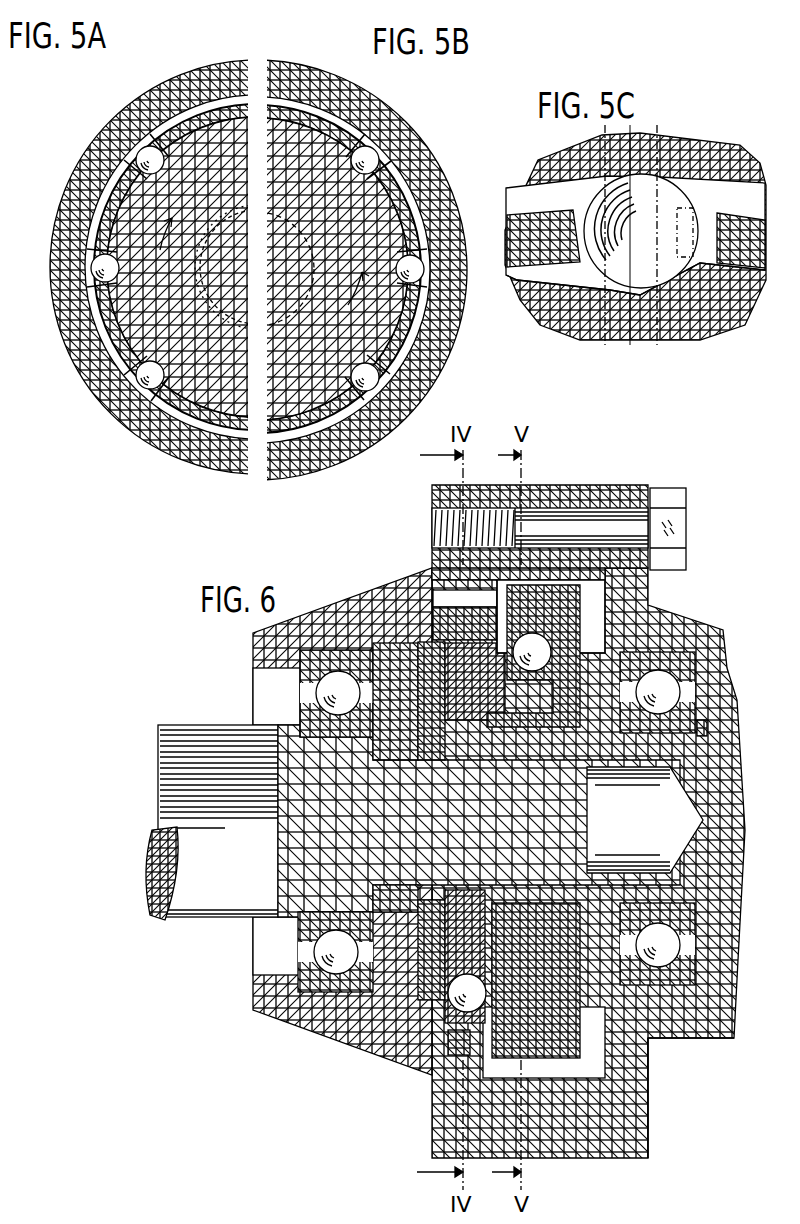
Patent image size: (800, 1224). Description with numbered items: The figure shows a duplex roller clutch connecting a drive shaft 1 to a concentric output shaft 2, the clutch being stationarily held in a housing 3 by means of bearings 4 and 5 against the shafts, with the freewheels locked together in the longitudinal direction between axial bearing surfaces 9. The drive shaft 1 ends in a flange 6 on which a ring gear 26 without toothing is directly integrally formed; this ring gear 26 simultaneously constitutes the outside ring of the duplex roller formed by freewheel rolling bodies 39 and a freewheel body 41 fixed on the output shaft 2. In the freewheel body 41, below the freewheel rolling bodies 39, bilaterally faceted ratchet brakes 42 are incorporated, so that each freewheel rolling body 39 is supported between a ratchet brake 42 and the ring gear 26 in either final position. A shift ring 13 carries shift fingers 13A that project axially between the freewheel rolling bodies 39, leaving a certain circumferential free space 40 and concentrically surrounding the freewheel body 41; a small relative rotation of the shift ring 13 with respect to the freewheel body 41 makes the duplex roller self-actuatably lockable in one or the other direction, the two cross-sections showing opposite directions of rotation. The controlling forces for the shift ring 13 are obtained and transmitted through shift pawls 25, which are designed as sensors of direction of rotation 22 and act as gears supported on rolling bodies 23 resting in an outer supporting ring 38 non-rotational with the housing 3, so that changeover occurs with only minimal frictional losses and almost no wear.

In FIG. 6, the drive shaft 1 is at (722, 840).
In FIG. 5A, the output shaft 2 is at (207, 235).
In FIG. 5B, the output shaft 2 is at (305, 200).
In FIG. 6, the output shaft 2 is at (213, 878).
In FIG. 6, the housing 3 is at (432, 578).
In FIG. 6, the bearing 4 is at (662, 955).
In FIG. 6, the bearing 5 is at (310, 1010).
In FIG. 6, the flange 6 is at (662, 700).
In FIG. 6, the axial bearing surfaces 9 is at (395, 655).
In FIG. 6, the shift ring 13 is at (440, 665).
In FIG. 5A, the shift fingers 13A is at (118, 366).
In FIG. 5C, the shift fingers 13A is at (733, 305).
In FIG. 6, the shift fingers 13A is at (625, 1095).
In FIG. 6, the sensor of direction of rotation 22 is at (340, 932).
In FIG. 6, the rolling bodies 23 is at (452, 1050).
In FIG. 6, the shift pawls 25 is at (400, 1030).
In FIG. 5A, the ring gear 26 is at (104, 134).
In FIG. 5C, the ring gear 26 is at (725, 162).
In FIG. 6, the ring gear 26 is at (605, 645).
In FIG. 6, the outer supporting ring 38 is at (435, 1022).
In FIG. 5A, the freewheel rolling bodies 39 is at (149, 146).
In FIG. 5C, the freewheel rolling bodies 39 is at (665, 197).
In FIG. 6, the freewheel rolling bodies 39 is at (540, 652).
In FIG. 5C, the circumferential free space 40 is at (733, 182).
In FIG. 5A, the freewheel body 41 is at (221, 173).
In FIG. 6, the freewheel body 41 is at (707, 727).
In FIG. 5A, the ratchet brakes 42 is at (116, 292).
In FIG. 5C, the ratchet brakes 42 is at (612, 293).